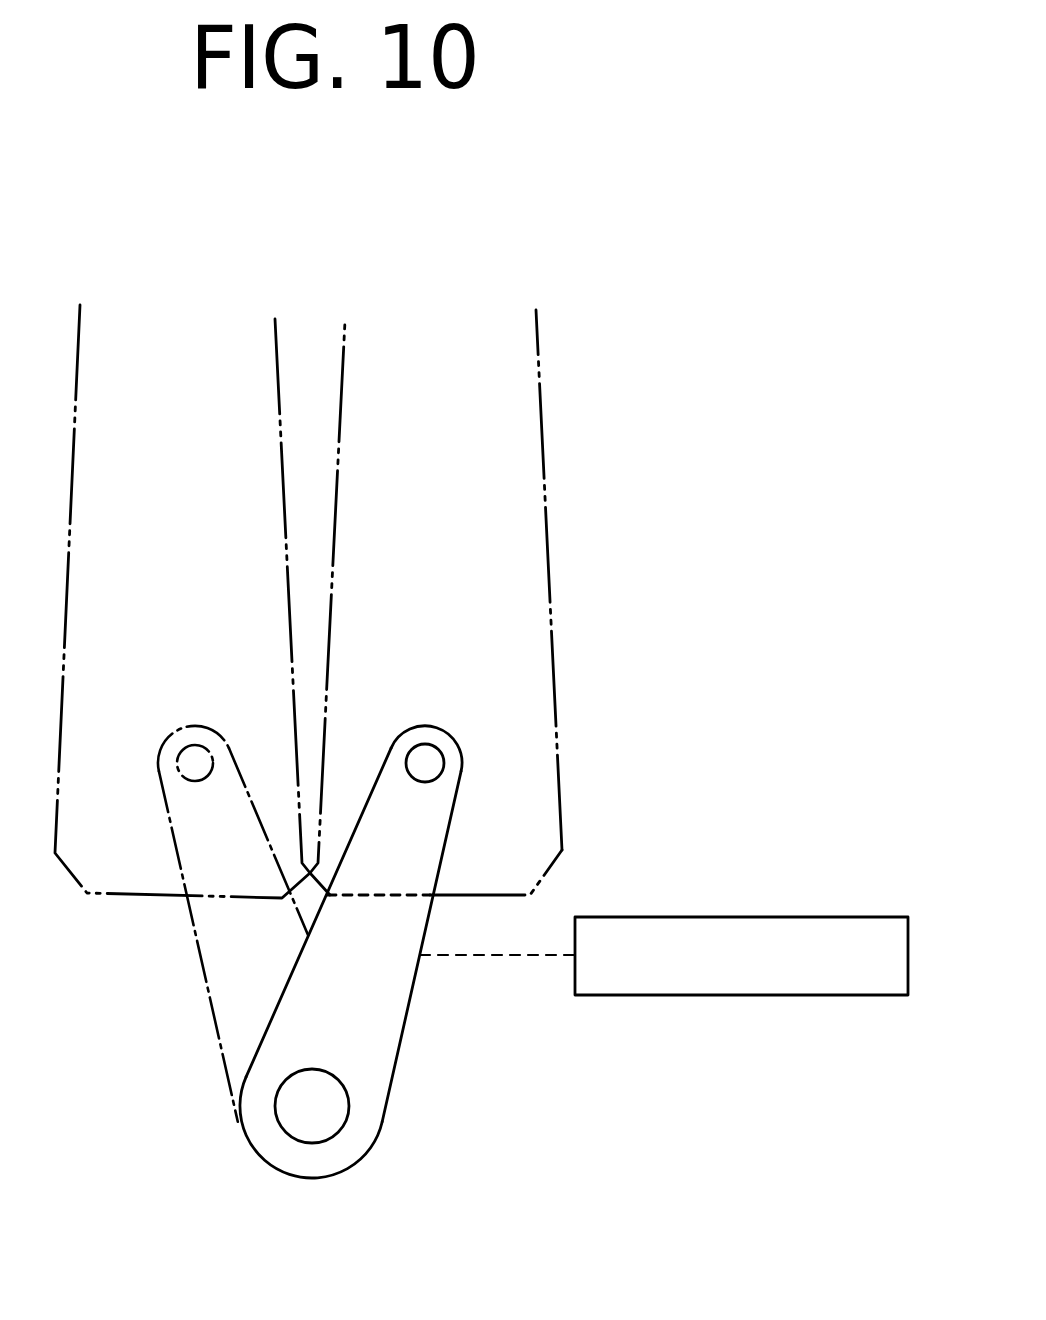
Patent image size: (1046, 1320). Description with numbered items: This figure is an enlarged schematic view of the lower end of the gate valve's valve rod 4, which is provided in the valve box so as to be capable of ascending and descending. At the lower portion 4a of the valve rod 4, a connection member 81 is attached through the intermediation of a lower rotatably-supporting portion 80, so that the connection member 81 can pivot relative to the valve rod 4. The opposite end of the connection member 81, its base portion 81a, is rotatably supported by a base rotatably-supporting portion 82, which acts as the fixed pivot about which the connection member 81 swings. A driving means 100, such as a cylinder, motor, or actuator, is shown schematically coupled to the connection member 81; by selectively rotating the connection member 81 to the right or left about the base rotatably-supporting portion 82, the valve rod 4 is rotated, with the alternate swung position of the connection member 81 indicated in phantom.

The valve rod 4 is at (523, 707).
The lower portion of the valve rod 4a is at (527, 800).
The lower rotatably-supporting portion 80 is at (437, 745).
The connection member 81 is at (362, 957).
The base portion of the connection member 81a is at (370, 1077).
The base rotatably-supporting portion 82 is at (345, 1123).
The drive unit 100 is at (775, 917).